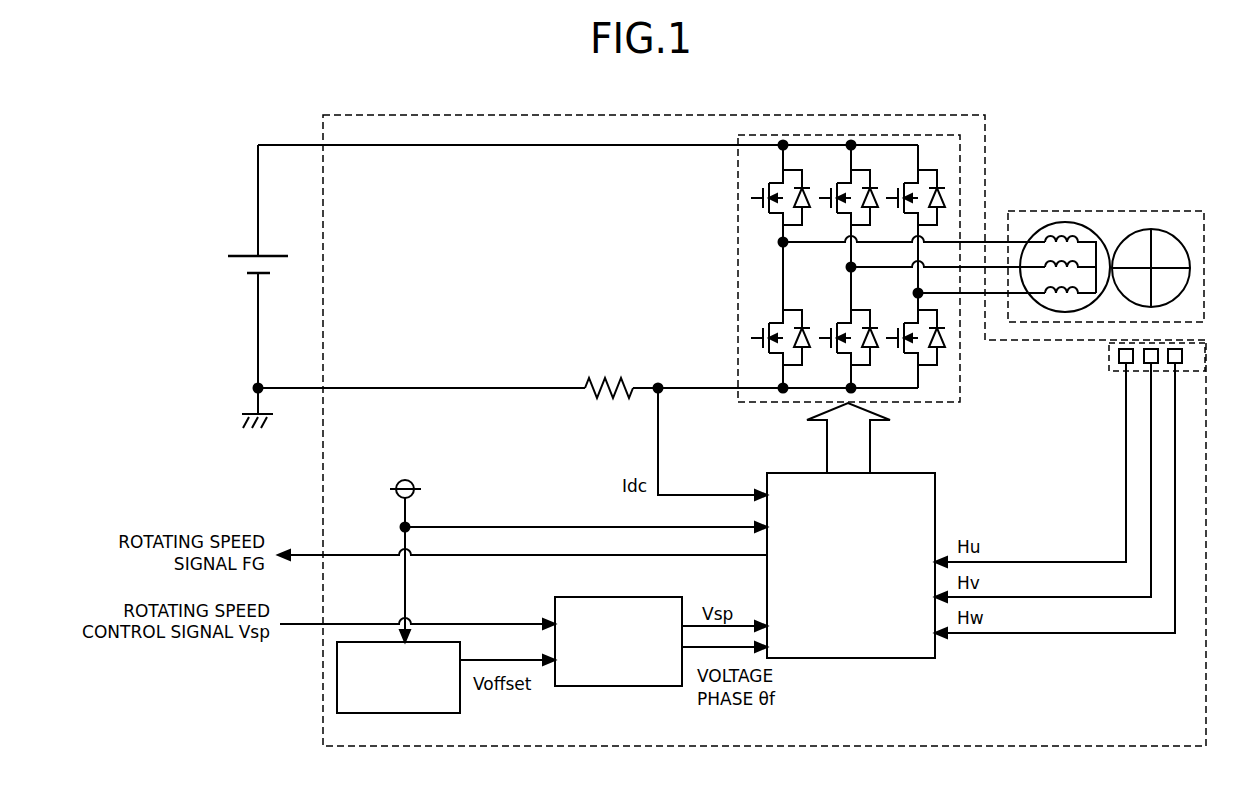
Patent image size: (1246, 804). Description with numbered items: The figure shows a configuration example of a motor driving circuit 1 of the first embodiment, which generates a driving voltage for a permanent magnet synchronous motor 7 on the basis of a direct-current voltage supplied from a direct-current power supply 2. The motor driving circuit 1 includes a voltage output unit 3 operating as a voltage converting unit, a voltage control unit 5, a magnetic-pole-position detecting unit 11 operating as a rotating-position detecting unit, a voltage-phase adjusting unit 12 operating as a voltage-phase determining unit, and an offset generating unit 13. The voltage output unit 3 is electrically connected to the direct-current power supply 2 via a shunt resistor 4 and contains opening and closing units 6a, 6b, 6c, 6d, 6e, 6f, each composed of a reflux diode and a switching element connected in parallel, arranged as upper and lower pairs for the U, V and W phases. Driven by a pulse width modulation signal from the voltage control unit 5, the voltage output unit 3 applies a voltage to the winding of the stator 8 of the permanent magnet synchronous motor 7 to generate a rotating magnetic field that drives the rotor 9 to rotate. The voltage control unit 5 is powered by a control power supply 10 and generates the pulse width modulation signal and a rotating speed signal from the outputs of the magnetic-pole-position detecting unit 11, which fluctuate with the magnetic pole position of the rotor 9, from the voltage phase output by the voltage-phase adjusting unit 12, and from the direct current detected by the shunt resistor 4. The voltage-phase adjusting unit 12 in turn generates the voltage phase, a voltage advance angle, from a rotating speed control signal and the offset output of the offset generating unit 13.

The motor driving circuit 1 is at (559, 115).
The direct-current power supply 2 is at (252, 276).
The voltage output unit 3 is at (948, 133).
The shunt resistor 4 is at (605, 378).
The voltage control unit 5 is at (909, 473).
The opening and closing unit 6a is at (797, 168).
The opening and closing unit 6b is at (865, 168).
The opening and closing unit 6c is at (932, 168).
The opening and closing unit 6d is at (795, 364).
The opening and closing unit 6e is at (863, 364).
The opening and closing unit 6f is at (928, 364).
The permanent magnet synchronous motor 7 is at (1180, 212).
The stator 8 is at (1066, 222).
The rotor 9 is at (1152, 229).
The control power supply 10 is at (405, 480).
The magnetic-pole-position detecting unit 11 is at (1193, 356).
The voltage-phase adjusting unit 12 is at (640, 598).
The offset generating unit 13 is at (428, 714).